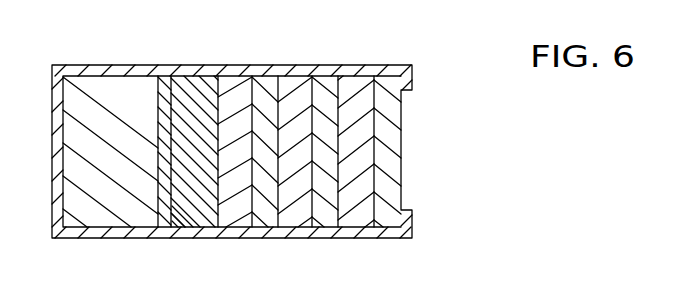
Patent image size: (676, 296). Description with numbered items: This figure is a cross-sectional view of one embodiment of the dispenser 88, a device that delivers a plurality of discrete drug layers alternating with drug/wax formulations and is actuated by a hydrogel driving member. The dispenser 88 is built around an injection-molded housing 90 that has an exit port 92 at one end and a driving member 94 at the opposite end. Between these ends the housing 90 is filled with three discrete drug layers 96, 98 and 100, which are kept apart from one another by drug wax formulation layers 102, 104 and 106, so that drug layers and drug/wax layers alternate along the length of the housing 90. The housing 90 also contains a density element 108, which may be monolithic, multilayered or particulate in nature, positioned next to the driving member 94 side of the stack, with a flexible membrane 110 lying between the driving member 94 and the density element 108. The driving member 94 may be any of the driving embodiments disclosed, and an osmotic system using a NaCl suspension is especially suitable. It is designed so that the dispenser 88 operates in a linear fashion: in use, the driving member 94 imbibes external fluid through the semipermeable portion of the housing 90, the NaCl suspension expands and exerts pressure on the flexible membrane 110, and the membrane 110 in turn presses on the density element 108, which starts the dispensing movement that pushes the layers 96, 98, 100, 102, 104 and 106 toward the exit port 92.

The dispenser 88 is at (336, 34).
The housing 90 is at (137, 239).
The exit port 92 is at (403, 205).
The driving member 94 is at (90, 76).
The discrete drug layer 96 is at (389, 228).
The discrete drug layer 98 is at (331, 228).
The discrete drug layer 100 is at (268, 228).
The drug wax formulation layer 102 is at (355, 76).
The drug wax formulation layer 104 is at (297, 75).
The drug wax formulation layer 106 is at (238, 75).
The density element 108 is at (195, 75).
The flexible membrane 110 is at (176, 206).